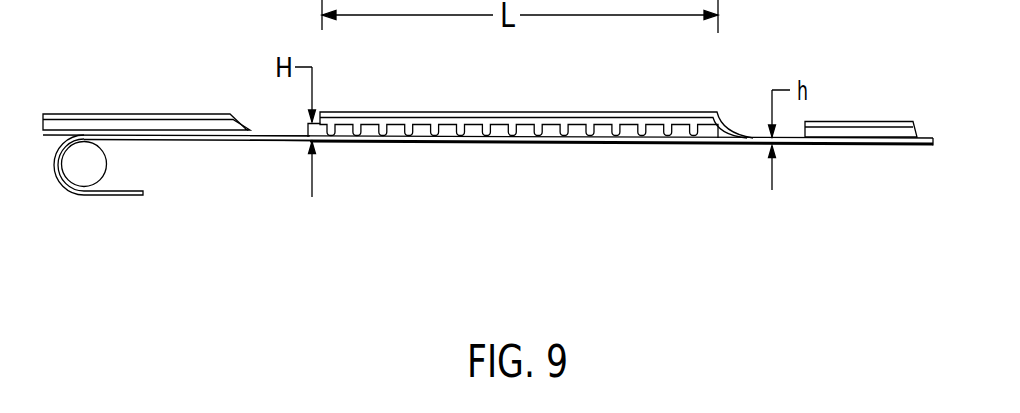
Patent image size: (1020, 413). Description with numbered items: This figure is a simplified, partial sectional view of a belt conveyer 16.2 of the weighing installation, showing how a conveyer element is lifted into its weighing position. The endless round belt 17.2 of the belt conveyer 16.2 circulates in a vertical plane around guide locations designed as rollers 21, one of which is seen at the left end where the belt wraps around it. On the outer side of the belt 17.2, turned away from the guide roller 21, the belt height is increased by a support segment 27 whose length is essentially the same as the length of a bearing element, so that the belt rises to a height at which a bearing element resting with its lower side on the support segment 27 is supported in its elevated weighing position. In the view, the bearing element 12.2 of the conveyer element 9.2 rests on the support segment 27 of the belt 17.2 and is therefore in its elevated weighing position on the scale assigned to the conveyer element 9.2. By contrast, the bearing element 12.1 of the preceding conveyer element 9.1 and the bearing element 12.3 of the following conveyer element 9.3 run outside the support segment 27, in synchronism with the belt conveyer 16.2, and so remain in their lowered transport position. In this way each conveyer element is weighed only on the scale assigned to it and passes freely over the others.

The conveyer element 9.1 is at (146, 86).
The bearing element 12.1 is at (183, 120).
The guide roller 21 is at (82, 172).
The belt conveyer 16.2 is at (137, 199).
The belt 17.2 is at (282, 143).
The conveyer element 9.2 is at (530, 99).
The bearing element 12.2 is at (640, 117).
The support segment 27 is at (488, 199).
The conveyer element 9.3 is at (861, 95).
The bearing element 12.3 is at (853, 127).